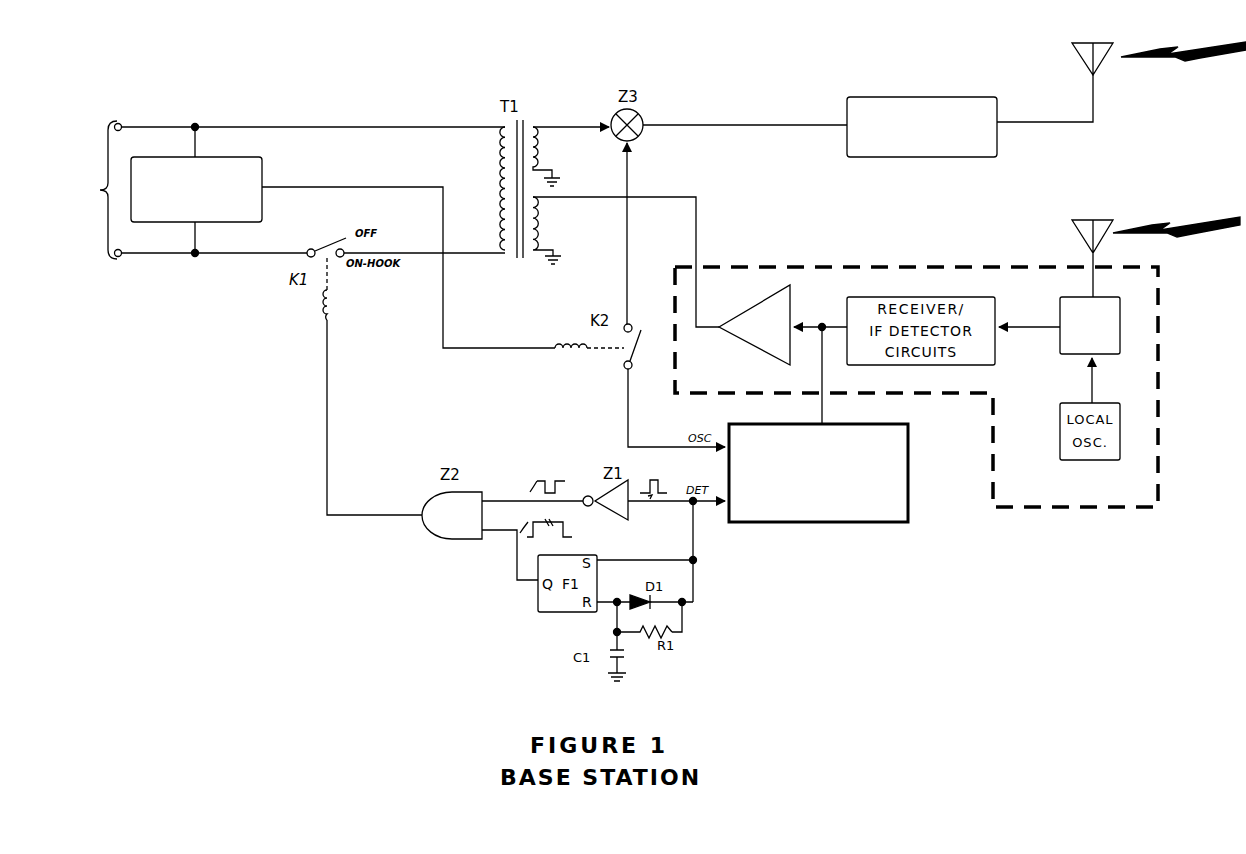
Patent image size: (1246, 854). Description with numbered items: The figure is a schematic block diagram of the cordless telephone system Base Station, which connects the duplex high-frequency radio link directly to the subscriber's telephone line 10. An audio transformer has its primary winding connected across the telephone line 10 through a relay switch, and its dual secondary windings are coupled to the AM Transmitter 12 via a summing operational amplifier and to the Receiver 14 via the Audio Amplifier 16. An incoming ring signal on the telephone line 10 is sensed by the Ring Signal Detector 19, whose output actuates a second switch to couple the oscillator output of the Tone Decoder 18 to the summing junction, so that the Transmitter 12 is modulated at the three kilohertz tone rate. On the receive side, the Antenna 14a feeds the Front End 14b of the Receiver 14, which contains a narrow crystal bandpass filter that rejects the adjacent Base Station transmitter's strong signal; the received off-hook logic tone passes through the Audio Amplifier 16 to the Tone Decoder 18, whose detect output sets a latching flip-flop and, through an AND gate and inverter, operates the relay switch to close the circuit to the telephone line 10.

The telephone line 10 is at (262, 190).
The AM Transmitter 12 is at (926, 97).
The Receiver 14 is at (916, 377).
The Antenna 14a is at (1078, 246).
The Front End 14b is at (1064, 297).
The Audio Amplifier 16 is at (748, 290).
The Tone Decoder 18 is at (910, 475).
The Ring Signal Detector 19 is at (236, 157).